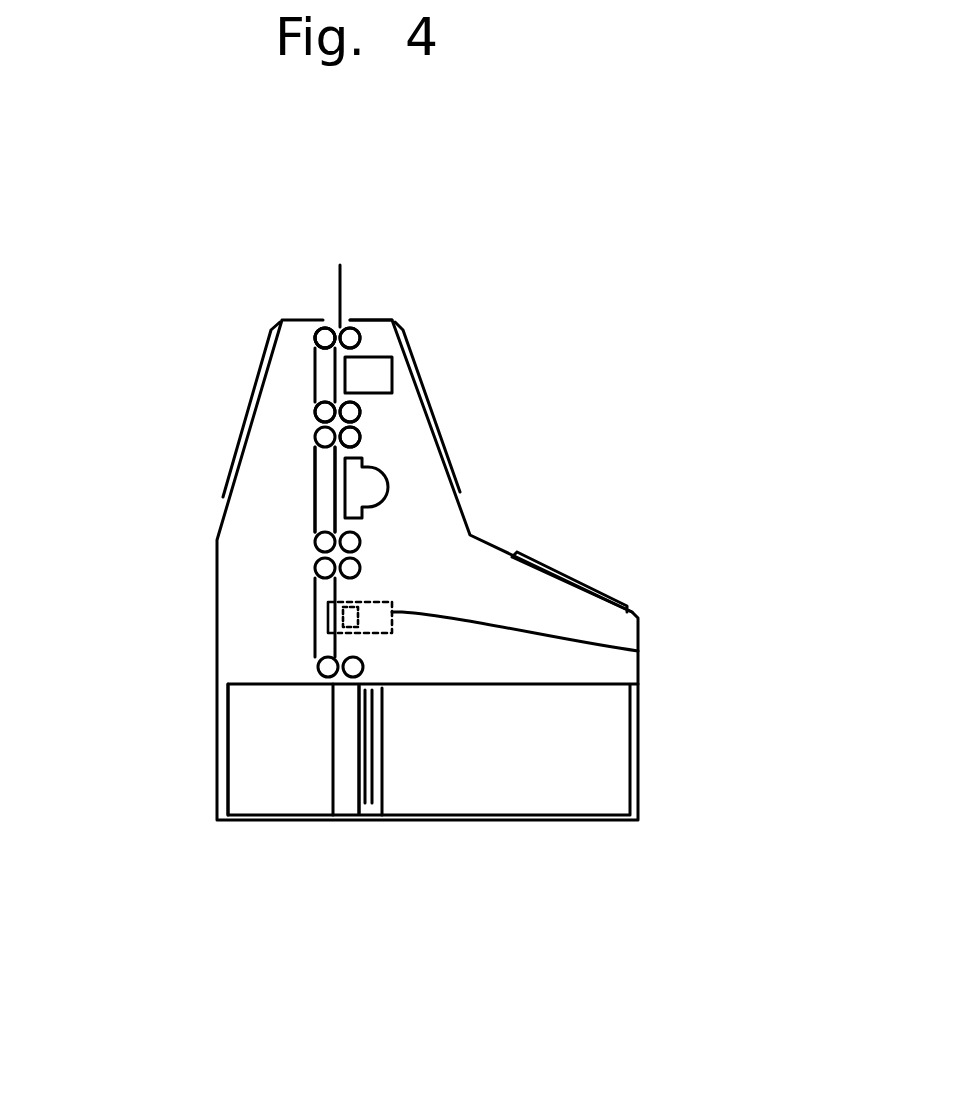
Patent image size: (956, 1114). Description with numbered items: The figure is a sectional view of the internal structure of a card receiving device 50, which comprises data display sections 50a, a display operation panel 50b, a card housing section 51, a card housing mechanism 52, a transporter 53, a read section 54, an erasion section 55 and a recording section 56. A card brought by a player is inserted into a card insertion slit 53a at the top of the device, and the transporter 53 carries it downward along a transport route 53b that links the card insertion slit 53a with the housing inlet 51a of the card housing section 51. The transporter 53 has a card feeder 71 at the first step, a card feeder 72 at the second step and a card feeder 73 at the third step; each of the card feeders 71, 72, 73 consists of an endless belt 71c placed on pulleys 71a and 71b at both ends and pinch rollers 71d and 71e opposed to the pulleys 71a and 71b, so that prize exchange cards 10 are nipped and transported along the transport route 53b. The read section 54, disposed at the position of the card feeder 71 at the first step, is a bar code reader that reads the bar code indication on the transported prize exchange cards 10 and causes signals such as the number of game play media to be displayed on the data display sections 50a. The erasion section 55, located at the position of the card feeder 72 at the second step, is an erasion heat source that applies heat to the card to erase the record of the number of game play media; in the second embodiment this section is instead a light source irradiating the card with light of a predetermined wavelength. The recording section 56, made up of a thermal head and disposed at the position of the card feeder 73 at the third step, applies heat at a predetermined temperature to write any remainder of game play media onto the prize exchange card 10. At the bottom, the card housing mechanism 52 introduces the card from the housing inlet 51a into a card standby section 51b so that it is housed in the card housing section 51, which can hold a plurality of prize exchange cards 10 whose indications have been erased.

The card receiving device 50 is at (448, 193).
The data display section 50a is at (222, 495).
The display operation panel 50b is at (595, 592).
The card housing section 51 is at (478, 798).
The inlet 51a is at (325, 678).
The card standby section 51b is at (345, 798).
The card housing mechanism 52 is at (265, 798).
The transporter 53 is at (315, 505).
The card insertion slit 53a is at (352, 313).
The transport route 53b is at (360, 445).
The read section 54 is at (383, 368).
The erasion section 55 is at (390, 482).
The recording section 56 is at (645, 653).
The prize exchange card 10 is at (338, 283).
The card feeder 71 is at (313, 377).
The pulley 71a is at (313, 319).
The pulley 71b is at (315, 415).
The endless belt 71c is at (318, 348).
The pinch roller 71d is at (365, 342).
The pinch roller 71e is at (357, 408).
The card feeder 72 is at (312, 523).
The card feeder 73 is at (318, 613).